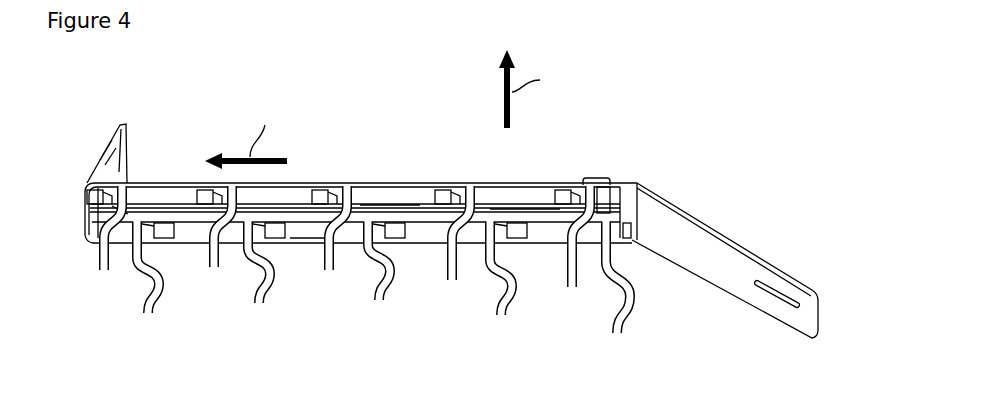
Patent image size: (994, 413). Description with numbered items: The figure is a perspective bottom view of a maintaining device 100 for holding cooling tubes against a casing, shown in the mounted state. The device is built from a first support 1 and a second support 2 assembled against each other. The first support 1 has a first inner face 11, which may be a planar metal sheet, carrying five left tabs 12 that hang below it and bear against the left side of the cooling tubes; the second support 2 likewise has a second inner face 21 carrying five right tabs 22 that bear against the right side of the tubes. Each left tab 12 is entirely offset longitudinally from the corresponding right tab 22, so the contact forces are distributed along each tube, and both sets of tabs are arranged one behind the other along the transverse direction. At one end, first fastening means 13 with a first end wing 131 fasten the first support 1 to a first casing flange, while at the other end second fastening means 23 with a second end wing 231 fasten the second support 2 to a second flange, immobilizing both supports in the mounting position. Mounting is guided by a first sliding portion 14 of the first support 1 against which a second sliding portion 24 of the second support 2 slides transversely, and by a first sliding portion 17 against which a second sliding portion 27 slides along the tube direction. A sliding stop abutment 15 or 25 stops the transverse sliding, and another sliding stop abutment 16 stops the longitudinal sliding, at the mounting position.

The maintaining device 100 is at (630, 107).
The first support 1 is at (288, 197).
The first inner face 11 is at (396, 196).
The left tab 12 is at (98, 252).
The first fastening means 13 is at (96, 148).
The first end wing 131 is at (114, 166).
The first sliding portion 14 is at (535, 176).
The second sliding portion 24 is at (535, 176).
The other sliding stop abutment 16 is at (508, 206).
The sliding stop abutment 15 is at (211, 150).
The first sliding portion 17 is at (211, 150).
The second sliding portion 27 is at (130, 218).
The sliding stop abutment 25 is at (612, 202).
The second support 2 is at (415, 238).
The second inner face 21 is at (302, 228).
The right tab 22 is at (155, 303).
The second fastening means 23 is at (731, 224).
The second end wing 231 is at (715, 268).